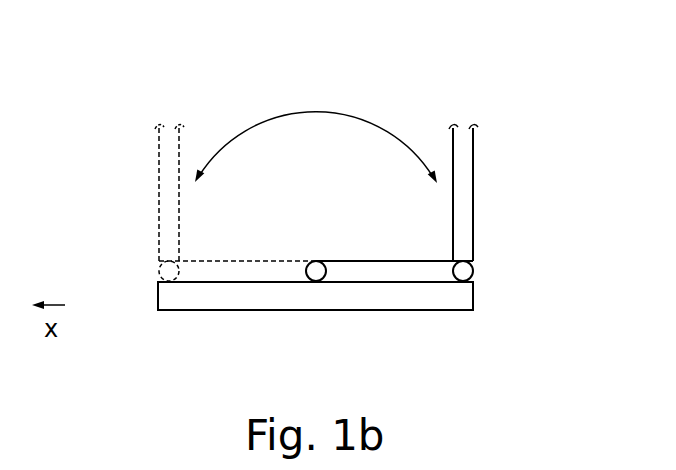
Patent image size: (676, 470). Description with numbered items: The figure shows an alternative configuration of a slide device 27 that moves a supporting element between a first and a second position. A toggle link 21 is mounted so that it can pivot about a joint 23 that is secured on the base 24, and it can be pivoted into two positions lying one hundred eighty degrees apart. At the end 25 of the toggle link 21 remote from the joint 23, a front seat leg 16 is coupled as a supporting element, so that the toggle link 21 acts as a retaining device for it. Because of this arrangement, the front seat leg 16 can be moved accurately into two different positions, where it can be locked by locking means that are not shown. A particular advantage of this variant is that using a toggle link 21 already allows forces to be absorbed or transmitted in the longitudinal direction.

The front seat leg 16 is at (150, 184).
The toggle link 21 is at (410, 268).
The joint 23 is at (314, 262).
The base 24 is at (242, 298).
The end 25 is at (463, 271).
The slide device 27 is at (343, 80).